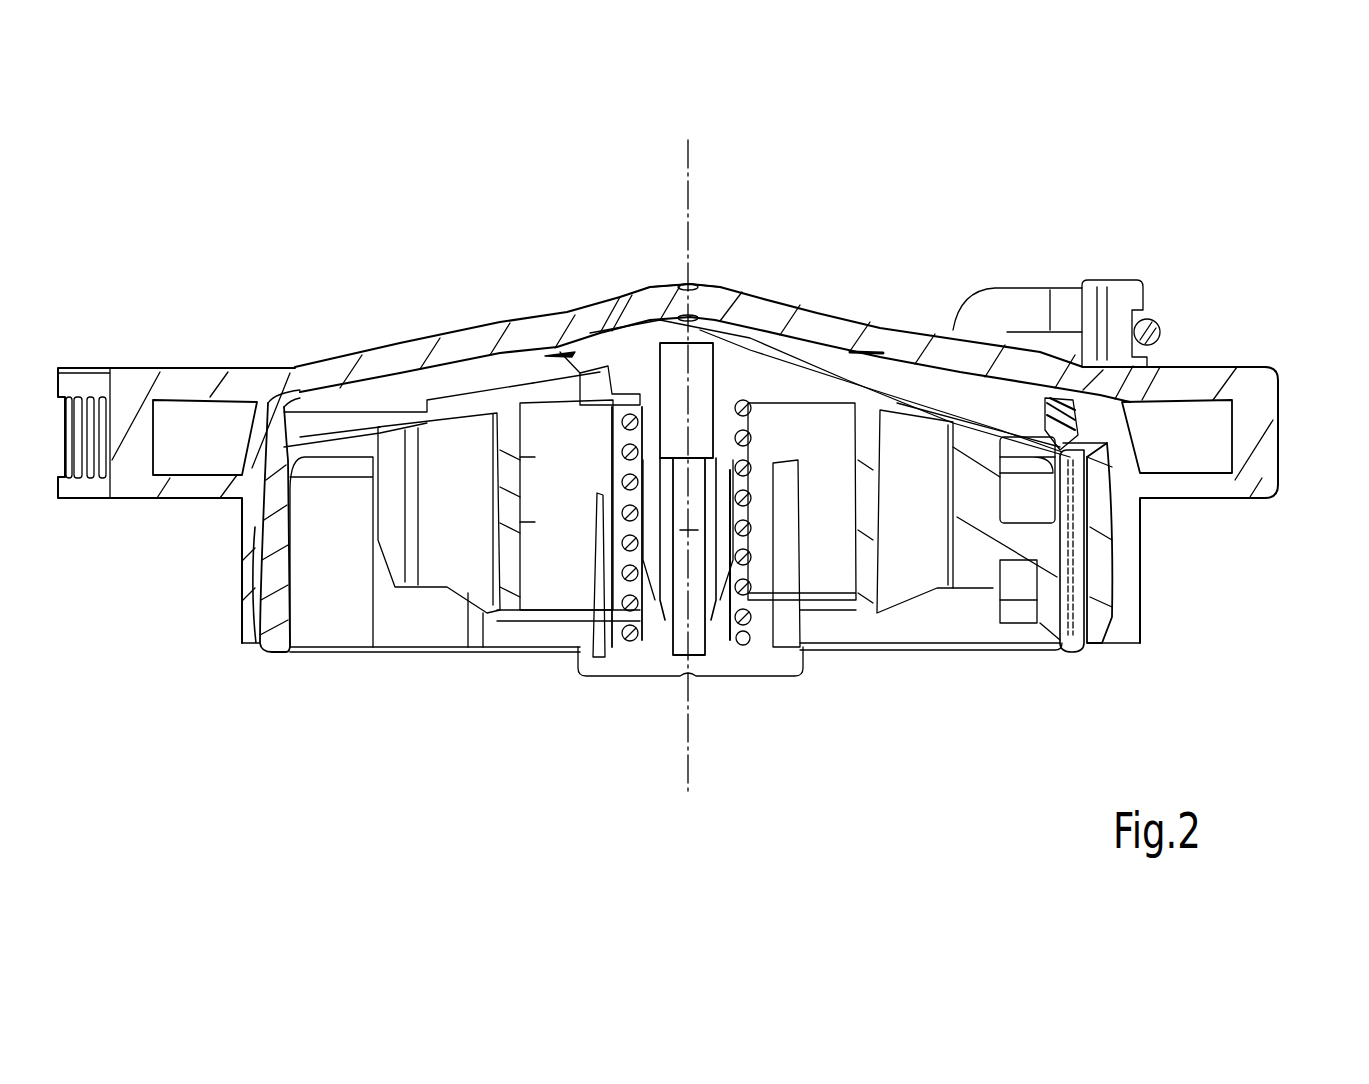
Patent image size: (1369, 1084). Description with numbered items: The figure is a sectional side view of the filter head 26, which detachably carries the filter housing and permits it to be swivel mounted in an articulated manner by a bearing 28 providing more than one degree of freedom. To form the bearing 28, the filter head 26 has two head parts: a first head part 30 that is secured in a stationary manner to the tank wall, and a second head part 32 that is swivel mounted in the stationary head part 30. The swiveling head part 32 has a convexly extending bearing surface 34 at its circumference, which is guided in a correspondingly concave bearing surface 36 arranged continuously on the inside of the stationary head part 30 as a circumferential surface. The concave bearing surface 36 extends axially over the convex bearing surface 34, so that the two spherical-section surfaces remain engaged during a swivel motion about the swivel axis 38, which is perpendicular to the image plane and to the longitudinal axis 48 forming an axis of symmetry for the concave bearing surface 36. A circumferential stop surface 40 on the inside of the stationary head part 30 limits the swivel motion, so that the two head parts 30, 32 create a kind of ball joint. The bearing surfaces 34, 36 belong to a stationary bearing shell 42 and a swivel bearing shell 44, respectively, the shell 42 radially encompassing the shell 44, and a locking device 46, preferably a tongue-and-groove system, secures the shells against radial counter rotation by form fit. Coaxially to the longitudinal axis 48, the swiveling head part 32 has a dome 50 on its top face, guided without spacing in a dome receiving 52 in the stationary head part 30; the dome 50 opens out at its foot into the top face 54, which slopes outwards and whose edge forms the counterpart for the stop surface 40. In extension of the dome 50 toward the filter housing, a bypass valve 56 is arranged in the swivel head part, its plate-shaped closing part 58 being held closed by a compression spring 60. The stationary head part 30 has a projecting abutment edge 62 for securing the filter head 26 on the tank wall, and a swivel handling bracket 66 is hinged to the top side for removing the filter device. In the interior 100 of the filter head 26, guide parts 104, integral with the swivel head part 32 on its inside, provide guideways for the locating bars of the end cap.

The filter head 26 is at (475, 335).
The bearing 28 is at (1113, 622).
The first head part 30 is at (257, 610).
The second head part 32 is at (287, 587).
The convex bearing surface 34 is at (1115, 550).
The concave bearing surface 36 is at (263, 540).
The swivel axis 38 is at (697, 545).
The stop surface 40 is at (295, 415).
The stationary bearing shell 42 is at (257, 580).
The swivel bearing shell 44 is at (280, 553).
The locking device 46 is at (1088, 445).
The longitudinal axis 48 is at (690, 238).
The dome 50 is at (730, 335).
The dome receiving 52 is at (633, 300).
The top face 54 is at (880, 380).
The bypass valve 56 is at (775, 678).
The closing part 58 is at (733, 678).
The compression spring 60 is at (622, 608).
The abutment edge 62 is at (1257, 402).
The handling bracket 66 is at (1157, 328).
The interior 100 is at (937, 509).
The guide parts 104 is at (1017, 540).